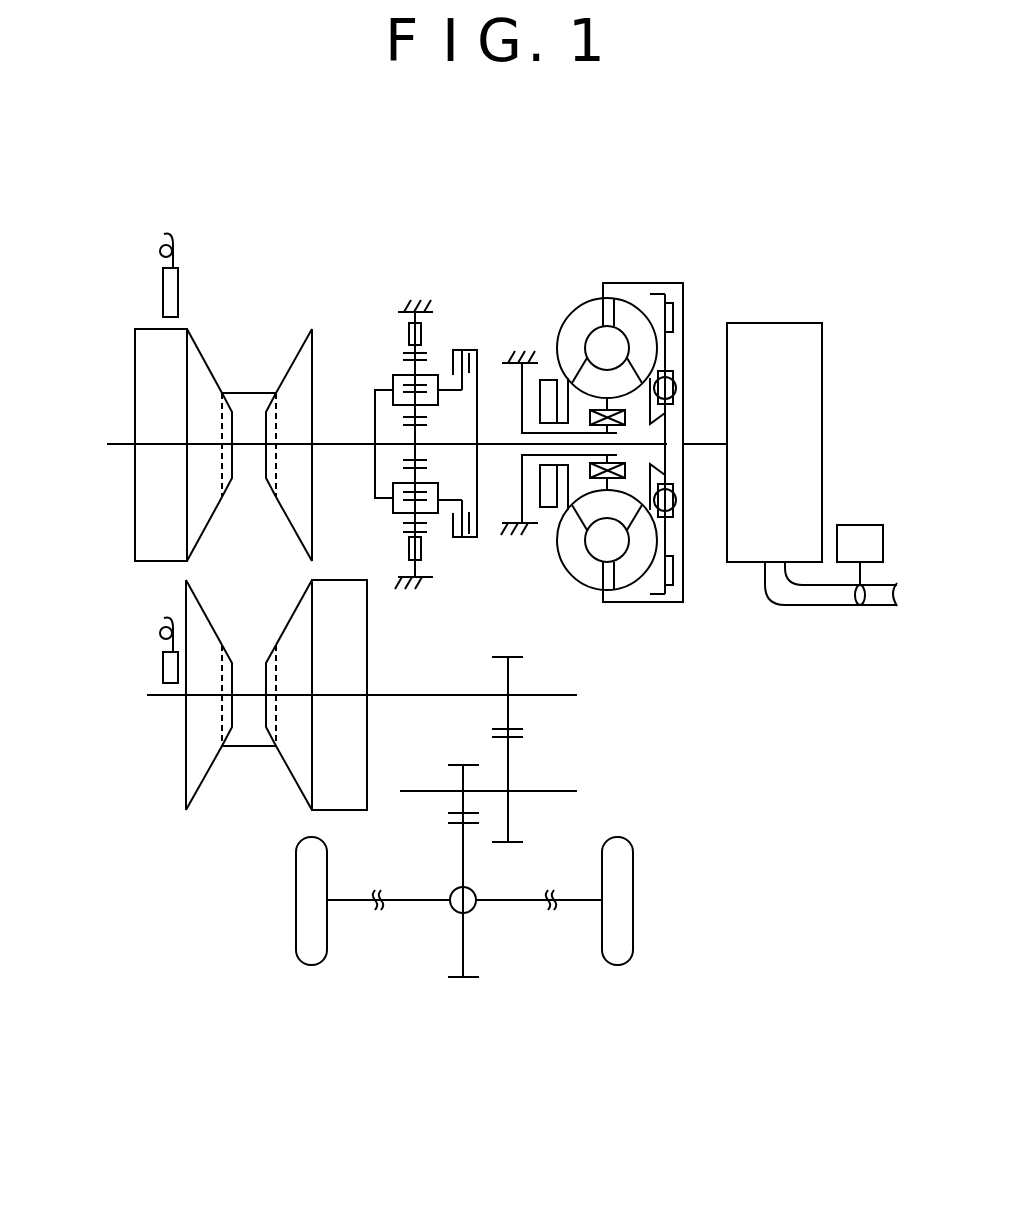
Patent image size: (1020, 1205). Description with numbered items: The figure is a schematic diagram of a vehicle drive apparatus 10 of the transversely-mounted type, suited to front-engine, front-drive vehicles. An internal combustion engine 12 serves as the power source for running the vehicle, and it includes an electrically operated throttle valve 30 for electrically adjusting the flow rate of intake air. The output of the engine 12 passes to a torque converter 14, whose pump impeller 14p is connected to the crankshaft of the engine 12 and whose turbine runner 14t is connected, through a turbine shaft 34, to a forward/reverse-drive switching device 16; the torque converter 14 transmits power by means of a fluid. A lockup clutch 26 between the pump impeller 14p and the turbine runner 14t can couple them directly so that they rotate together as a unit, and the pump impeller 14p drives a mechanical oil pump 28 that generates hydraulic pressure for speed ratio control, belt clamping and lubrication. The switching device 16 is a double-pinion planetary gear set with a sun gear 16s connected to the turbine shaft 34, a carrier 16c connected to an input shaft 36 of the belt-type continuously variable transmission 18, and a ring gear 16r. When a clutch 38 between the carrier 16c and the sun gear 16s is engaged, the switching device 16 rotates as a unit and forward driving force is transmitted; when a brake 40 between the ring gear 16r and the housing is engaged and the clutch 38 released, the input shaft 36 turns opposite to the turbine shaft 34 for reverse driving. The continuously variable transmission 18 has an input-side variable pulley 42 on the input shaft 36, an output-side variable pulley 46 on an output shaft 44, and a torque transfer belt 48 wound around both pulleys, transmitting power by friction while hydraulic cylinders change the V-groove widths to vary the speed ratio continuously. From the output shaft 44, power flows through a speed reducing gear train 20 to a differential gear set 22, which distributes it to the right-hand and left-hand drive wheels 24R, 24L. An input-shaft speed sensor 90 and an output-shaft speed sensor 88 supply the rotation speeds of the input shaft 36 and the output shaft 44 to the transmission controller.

The vehicle drive apparatus 10 is at (790, 233).
The internal combustion engine 12 is at (822, 400).
The torque converter 14 is at (628, 247).
The pump impeller 14p is at (585, 570).
The turbine runner 14t is at (628, 573).
The forward/reverse-drive switching device 16 is at (343, 278).
The carrier 16c is at (393, 380).
The sun gear 16s is at (405, 458).
The ring gear 16r is at (408, 534).
The belt-type continuously variable transmission 18 is at (235, 812).
The speed reducing gear train 20 is at (576, 752).
The differential gear set 22 is at (457, 903).
The left-hand side drive wheel 24L is at (302, 935).
The right-hand side drive wheel 24R is at (613, 933).
The lockup clutch 26 is at (670, 310).
The mechanical oil pump 28 is at (547, 387).
The electrically operated throttle valve 30 is at (850, 533).
The turbine shaft 34 is at (492, 447).
The input shaft 36 is at (340, 440).
The clutch 38 is at (457, 540).
The brake 40 is at (408, 333).
The input-side variable pulley 42 is at (142, 352).
The output shaft 44 is at (403, 695).
The output-side variable pulley 46 is at (368, 655).
The torque transfer belt 48 is at (245, 393).
The output-shaft speed sensor 88 is at (170, 667).
The input-shaft speed sensor 90 is at (177, 283).